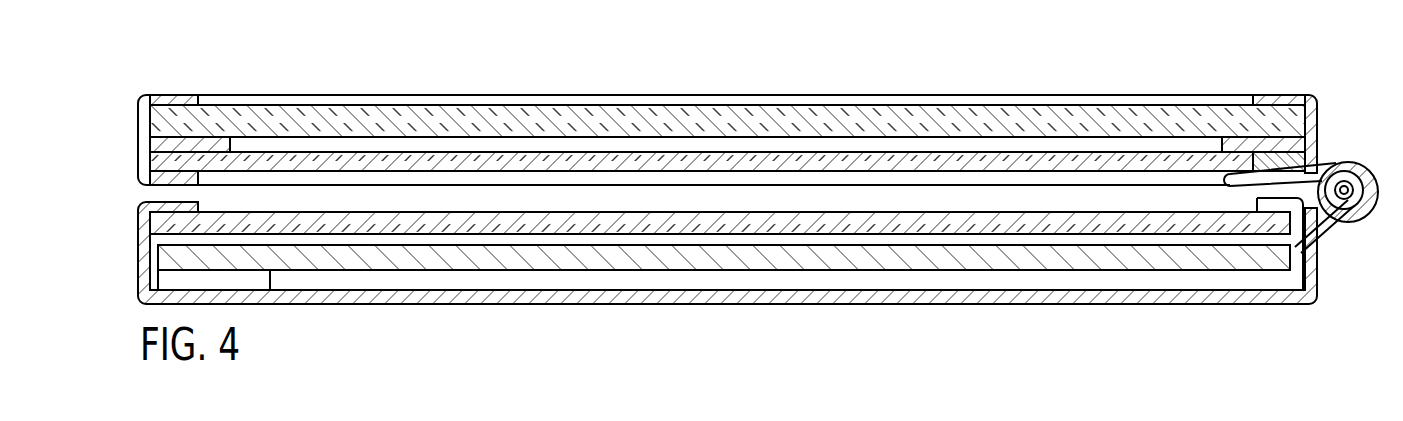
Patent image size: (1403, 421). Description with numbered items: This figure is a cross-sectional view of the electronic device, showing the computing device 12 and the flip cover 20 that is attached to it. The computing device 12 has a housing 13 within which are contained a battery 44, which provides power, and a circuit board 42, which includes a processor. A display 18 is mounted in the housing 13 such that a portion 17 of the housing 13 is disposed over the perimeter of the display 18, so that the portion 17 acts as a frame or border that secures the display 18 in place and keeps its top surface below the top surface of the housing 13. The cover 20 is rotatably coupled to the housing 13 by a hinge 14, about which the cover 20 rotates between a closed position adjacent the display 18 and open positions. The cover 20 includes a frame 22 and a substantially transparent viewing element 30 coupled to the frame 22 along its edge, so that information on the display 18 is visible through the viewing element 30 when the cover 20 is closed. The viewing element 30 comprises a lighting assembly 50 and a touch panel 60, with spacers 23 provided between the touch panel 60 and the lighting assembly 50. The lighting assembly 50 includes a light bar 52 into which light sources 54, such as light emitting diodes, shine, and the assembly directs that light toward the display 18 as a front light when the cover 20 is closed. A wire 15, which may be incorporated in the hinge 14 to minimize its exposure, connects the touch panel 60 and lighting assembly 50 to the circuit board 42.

The computing device 12 is at (138, 252).
The housing 13 is at (1234, 304).
The hinge 14 is at (1361, 222).
The wire 15 is at (1325, 232).
The portion of housing 17 is at (172, 203).
The display 18 is at (790, 227).
The cover 20 is at (1206, 84).
The frame 22 is at (166, 98).
The spacers 23 is at (203, 148).
The viewing element 30 is at (349, 86).
The circuit board 42 is at (1136, 262).
The battery 44 is at (258, 285).
The lighting assembly 50 is at (556, 160).
The light bar 52 is at (1308, 147).
The light sources 54 is at (294, 416).
The touch panel 60 is at (255, 125).